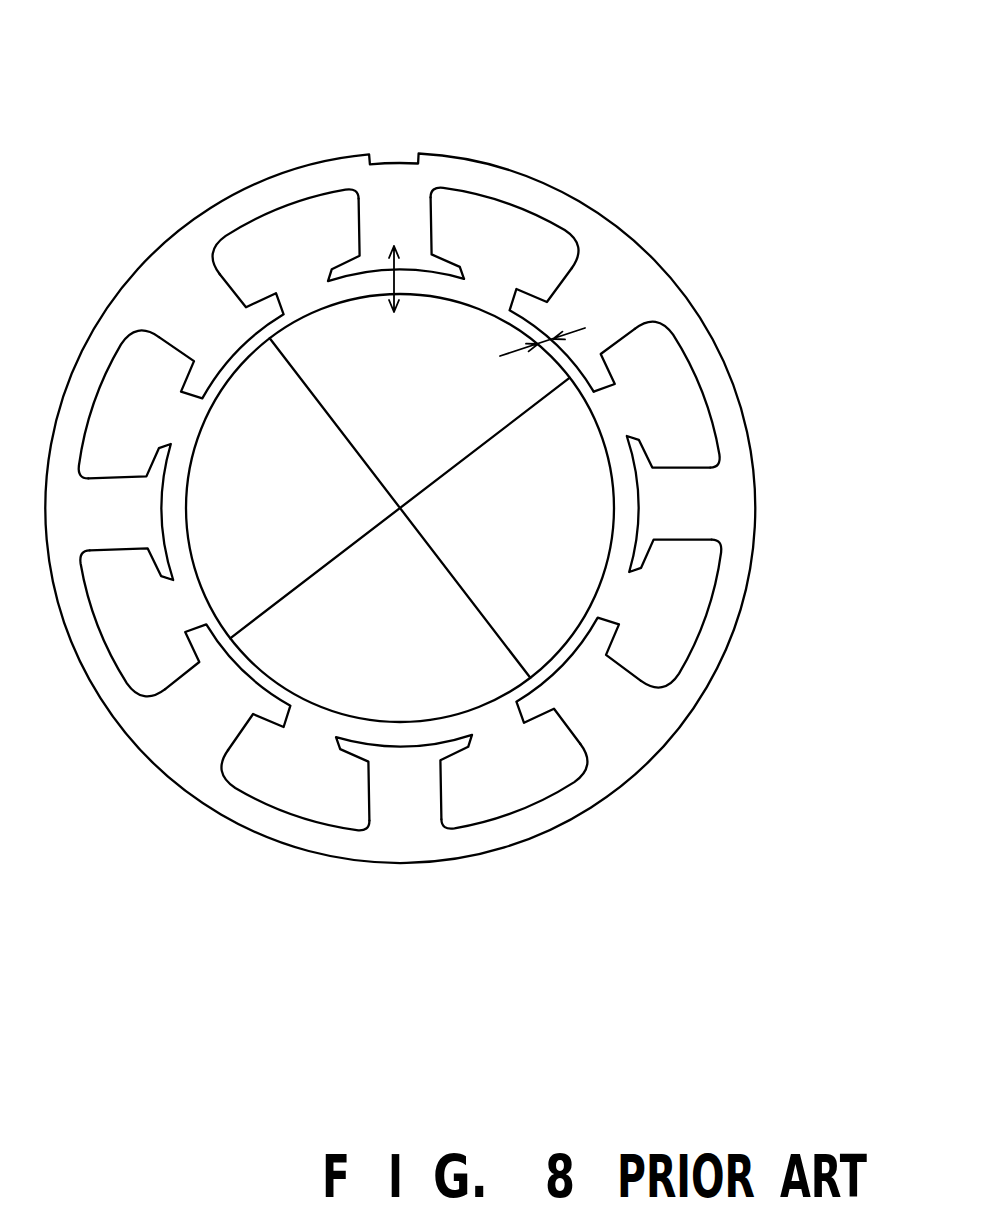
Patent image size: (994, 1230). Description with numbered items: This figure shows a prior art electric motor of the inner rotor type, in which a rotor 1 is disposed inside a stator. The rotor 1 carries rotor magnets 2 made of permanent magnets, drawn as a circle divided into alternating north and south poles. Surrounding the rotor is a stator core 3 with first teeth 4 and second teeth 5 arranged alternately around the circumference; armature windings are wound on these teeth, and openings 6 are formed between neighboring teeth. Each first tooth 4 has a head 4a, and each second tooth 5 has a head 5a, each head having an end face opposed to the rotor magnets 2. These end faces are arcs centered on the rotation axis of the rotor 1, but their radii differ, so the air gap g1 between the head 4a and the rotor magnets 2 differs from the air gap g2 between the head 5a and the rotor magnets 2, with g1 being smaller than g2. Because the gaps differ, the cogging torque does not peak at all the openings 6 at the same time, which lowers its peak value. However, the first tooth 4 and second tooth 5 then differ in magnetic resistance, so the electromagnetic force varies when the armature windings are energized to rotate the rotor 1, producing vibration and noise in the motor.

The rotor 1 is at (601, 420).
The rotor magnets 2 is at (577, 470).
The stator core 3 is at (617, 226).
The first tooth 4 is at (606, 296).
The head of first tooth 4a is at (597, 365).
The second tooth 5 is at (392, 222).
The head of second tooth 5a is at (452, 255).
The opening 6 is at (500, 278).
The air gap g1 is at (523, 356).
The air gap g2 is at (392, 283).